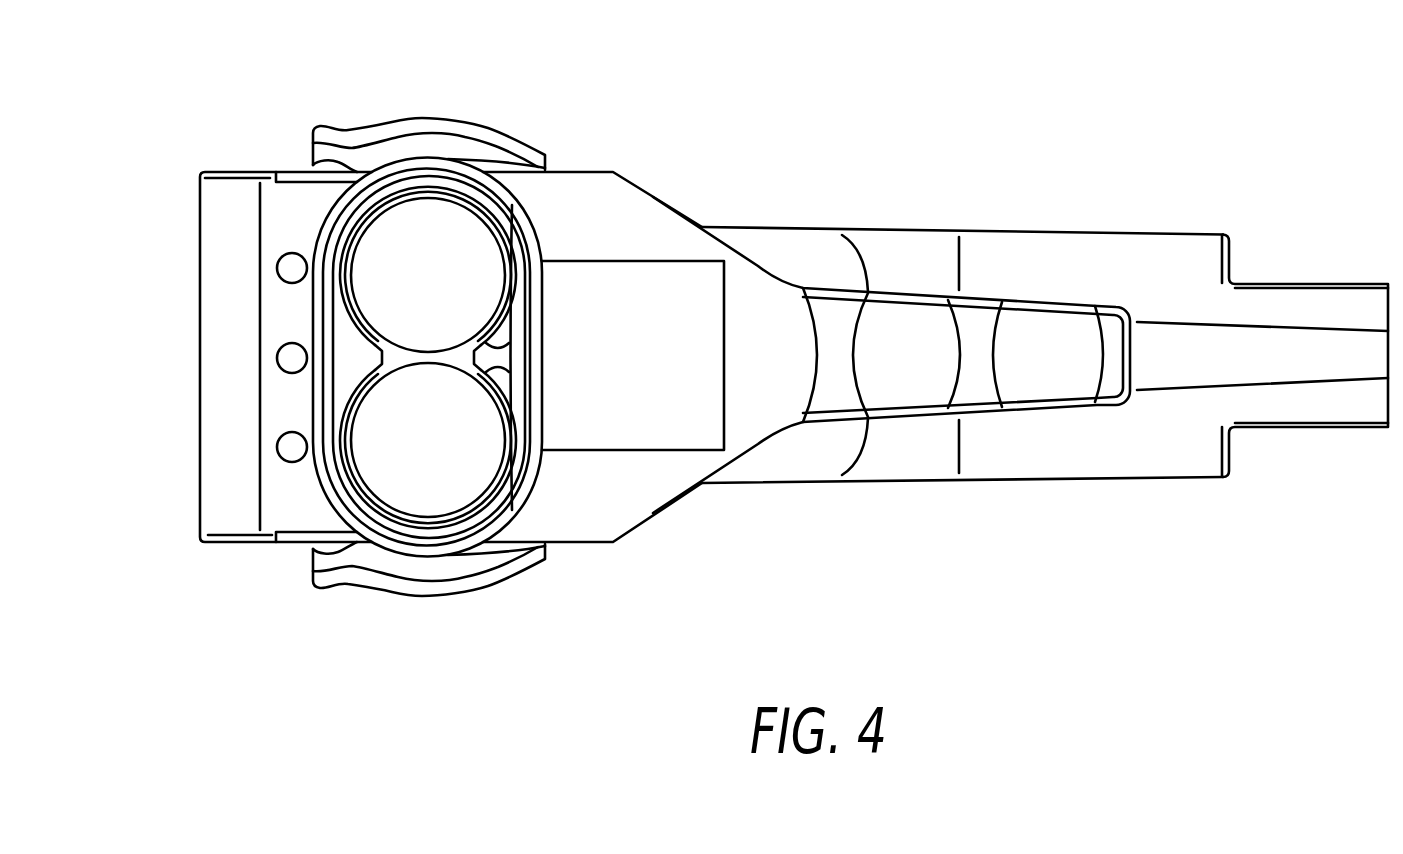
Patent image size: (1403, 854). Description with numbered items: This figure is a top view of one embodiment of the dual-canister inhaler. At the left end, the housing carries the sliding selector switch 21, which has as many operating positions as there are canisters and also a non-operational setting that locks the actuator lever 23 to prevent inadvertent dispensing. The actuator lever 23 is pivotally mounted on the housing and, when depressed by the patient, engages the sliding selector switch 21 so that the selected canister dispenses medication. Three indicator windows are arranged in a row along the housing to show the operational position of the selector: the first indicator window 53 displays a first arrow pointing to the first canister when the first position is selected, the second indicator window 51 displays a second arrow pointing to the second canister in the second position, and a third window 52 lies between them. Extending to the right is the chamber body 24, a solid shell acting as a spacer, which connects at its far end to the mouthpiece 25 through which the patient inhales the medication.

The sliding selector switch 21 is at (430, 118).
The actuator lever 23 is at (655, 197).
The chamber body 24 is at (1047, 231).
The mouthpiece 25 is at (1285, 295).
The second indicator window 51 is at (280, 446).
The hole 52 is at (280, 356).
The first indicator window 53 is at (280, 266).